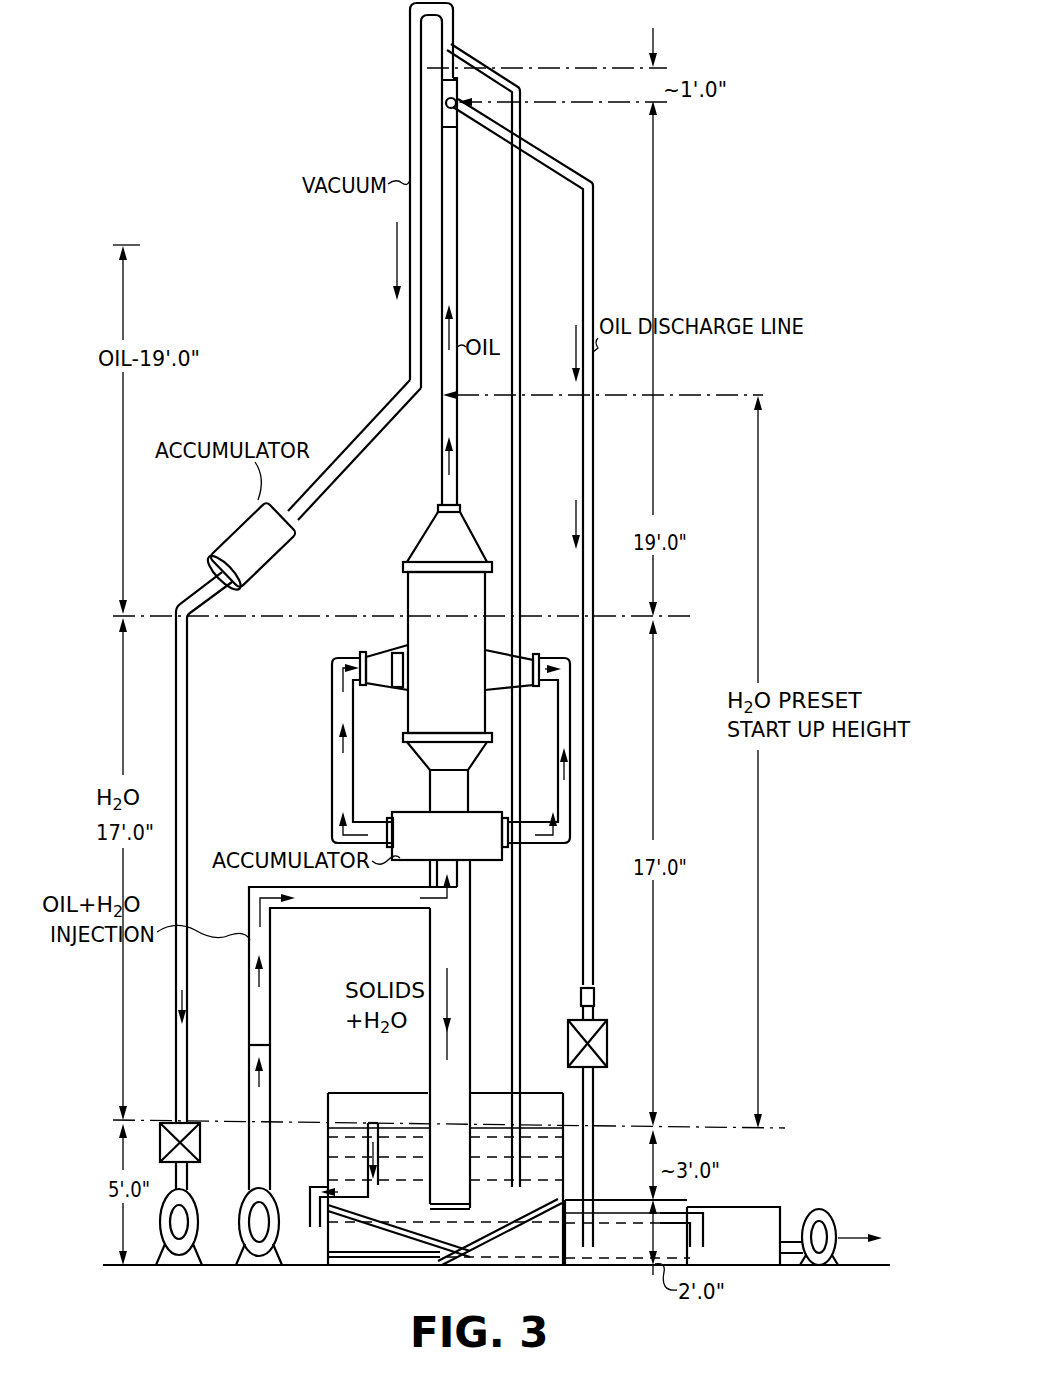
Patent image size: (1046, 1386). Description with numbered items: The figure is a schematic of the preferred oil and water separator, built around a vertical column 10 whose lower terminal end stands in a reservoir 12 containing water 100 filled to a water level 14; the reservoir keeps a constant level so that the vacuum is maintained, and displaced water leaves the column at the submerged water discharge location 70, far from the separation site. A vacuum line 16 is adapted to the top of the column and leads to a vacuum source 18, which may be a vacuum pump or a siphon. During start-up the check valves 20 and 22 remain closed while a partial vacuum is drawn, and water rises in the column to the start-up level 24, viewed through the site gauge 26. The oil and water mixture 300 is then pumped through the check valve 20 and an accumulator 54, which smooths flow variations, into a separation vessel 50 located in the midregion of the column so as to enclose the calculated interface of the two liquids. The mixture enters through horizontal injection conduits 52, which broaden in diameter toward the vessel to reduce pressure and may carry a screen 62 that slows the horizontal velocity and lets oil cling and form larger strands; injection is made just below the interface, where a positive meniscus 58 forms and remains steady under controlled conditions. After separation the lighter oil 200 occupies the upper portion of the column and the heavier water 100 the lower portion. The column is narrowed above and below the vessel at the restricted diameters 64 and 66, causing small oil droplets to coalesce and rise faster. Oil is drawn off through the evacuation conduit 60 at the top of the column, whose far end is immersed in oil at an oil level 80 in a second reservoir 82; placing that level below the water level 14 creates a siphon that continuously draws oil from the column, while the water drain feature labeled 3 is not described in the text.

The outlet conduit 3 is at (380, 1180).
The vertical column 10 is at (440, 447).
The reservoir 12 is at (328, 1113).
The water level 14 is at (400, 1123).
The vacuum line 16 is at (410, 93).
The vacuum source 18 is at (184, 1222).
The check valve 20 is at (272, 1066).
The check valve 22 is at (593, 994).
The start-up level 24 is at (458, 431).
The site gauge 26 is at (521, 298).
The separation vessel 50 is at (408, 635).
The injection conduits 52 is at (500, 653).
The accumulator 54 is at (497, 862).
The meniscus 58 is at (387, 600).
The evacuation conduit 60 is at (485, 120).
The screen 62 is at (390, 688).
The restricted diameter 64 is at (438, 514).
The restricted diameter 66 is at (428, 770).
The water discharge location 70 is at (448, 1213).
The oil level 80 is at (605, 1203).
The reservoir 82 is at (672, 1208).
The water 100 is at (445, 926).
The oil 200 is at (440, 492).
The oil and water mixture 300 is at (473, 678).